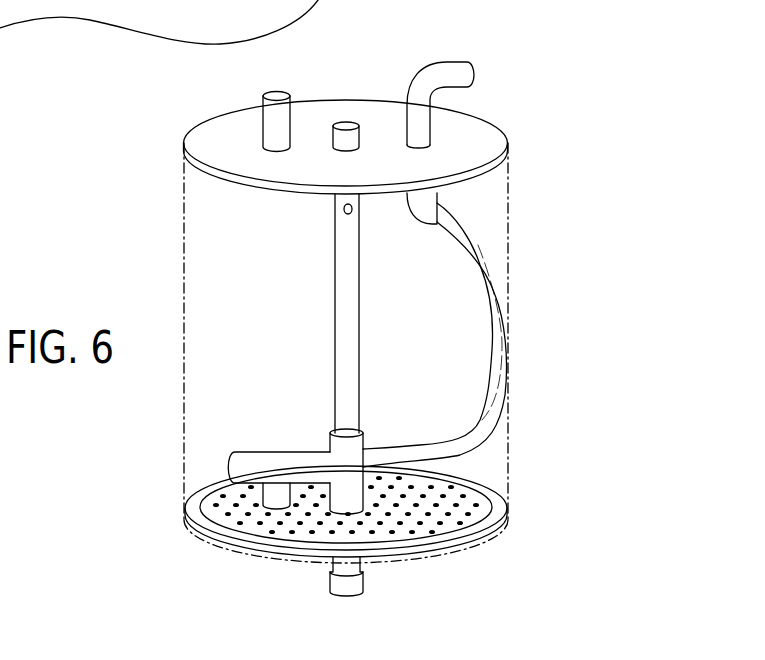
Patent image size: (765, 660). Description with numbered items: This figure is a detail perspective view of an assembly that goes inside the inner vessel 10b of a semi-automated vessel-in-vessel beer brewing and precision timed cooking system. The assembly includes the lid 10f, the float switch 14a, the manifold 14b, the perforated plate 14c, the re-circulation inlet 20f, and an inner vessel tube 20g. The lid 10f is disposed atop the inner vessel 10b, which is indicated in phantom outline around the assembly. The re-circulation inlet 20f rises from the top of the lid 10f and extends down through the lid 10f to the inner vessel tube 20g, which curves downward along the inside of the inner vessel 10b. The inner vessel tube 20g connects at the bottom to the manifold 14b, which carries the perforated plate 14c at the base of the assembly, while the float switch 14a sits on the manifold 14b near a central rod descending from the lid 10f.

The inner vessel 10b is at (184, 232).
The lid 10f is at (312, 120).
The re-circulation inlet 20f is at (452, 70).
The inner vessel tube 20g is at (458, 220).
The float switch 14a is at (275, 497).
The manifold 14b is at (285, 545).
The perforated plate 14c is at (463, 493).